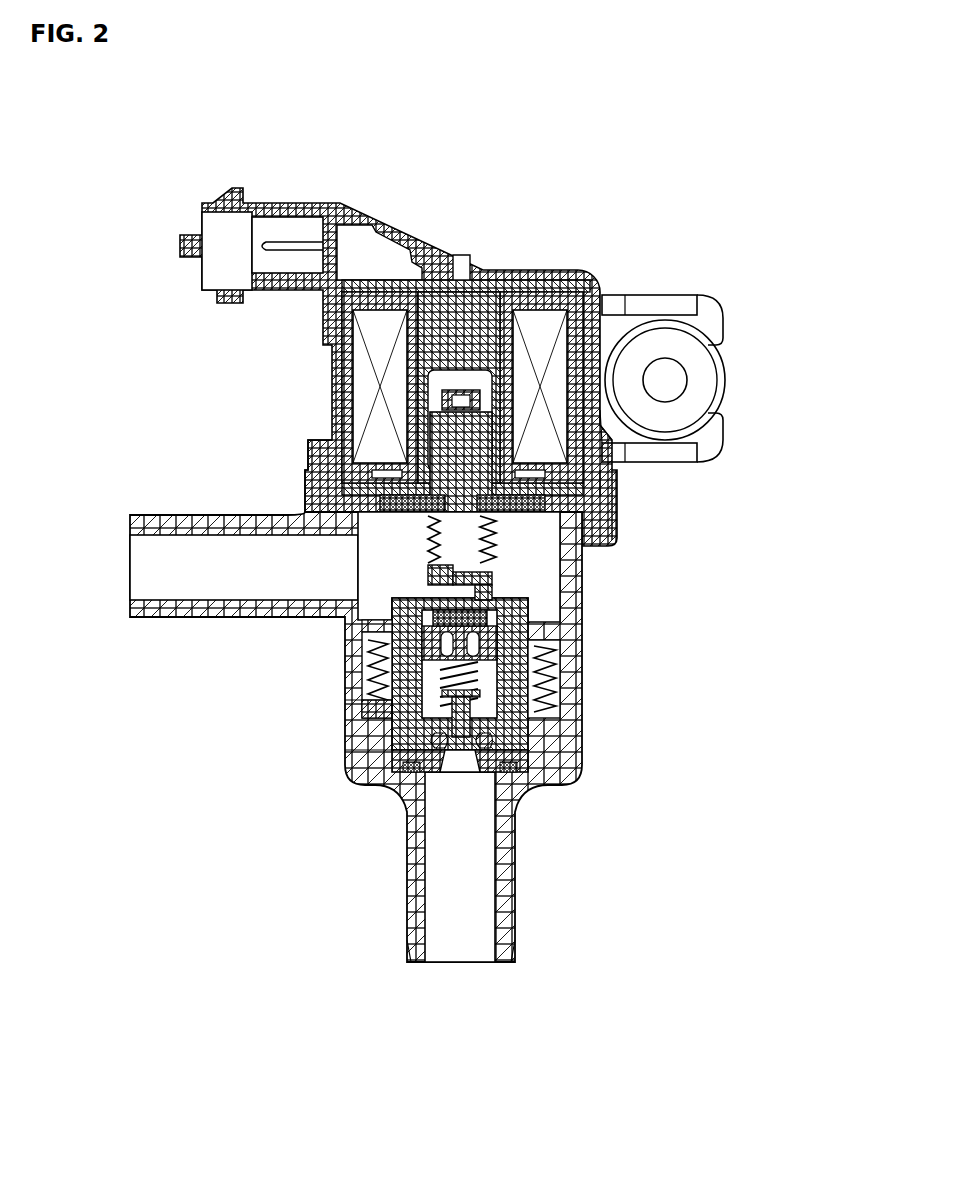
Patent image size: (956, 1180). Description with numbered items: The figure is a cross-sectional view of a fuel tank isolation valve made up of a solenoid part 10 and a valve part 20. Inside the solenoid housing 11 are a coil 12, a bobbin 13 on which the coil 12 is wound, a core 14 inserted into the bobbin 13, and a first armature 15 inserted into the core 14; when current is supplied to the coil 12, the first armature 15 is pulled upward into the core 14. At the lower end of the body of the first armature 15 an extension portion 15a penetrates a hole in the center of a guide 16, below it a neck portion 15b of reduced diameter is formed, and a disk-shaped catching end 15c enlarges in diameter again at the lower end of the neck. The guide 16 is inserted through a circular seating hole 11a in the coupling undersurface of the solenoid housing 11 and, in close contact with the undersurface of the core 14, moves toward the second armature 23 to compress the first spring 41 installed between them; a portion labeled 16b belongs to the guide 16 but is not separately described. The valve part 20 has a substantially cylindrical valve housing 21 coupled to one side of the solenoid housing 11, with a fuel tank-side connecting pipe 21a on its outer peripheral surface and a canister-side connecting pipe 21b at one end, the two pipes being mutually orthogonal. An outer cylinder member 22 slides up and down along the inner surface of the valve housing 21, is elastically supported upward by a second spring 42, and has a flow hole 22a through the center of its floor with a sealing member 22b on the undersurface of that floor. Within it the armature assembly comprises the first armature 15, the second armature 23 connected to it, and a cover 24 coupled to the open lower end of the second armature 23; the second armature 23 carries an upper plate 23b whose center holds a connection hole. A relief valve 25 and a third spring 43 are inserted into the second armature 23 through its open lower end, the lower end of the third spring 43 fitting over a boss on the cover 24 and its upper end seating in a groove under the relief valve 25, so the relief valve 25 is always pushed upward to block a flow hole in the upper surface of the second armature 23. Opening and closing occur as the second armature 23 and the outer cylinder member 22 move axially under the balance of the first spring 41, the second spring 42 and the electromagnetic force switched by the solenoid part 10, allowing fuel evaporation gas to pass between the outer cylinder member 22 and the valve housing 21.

The solenoid part 10 is at (452, 340).
The solenoid housing 11 is at (498, 268).
The seating hole 11a is at (318, 498).
The coil 12 is at (552, 322).
The bobbin 13 is at (528, 302).
The core 14 is at (405, 372).
The first armature 15 is at (428, 425).
The extension portion 15a is at (497, 563).
The neck portion 15b is at (490, 573).
The catching end 15c is at (497, 596).
The guide 16 is at (608, 536).
The bracket flange 16b is at (613, 505).
The valve part 20 is at (398, 758).
The valve housing 21 is at (343, 788).
The fuel tank-side connecting pipe 21a is at (183, 618).
The canister-side connecting pipe 21b is at (515, 892).
The outer cylinder member 22 is at (528, 640).
The flow hole 22a is at (460, 772).
The sealing member 22b is at (528, 765).
The second armature 23 is at (540, 678).
The upper plate 23b is at (428, 570).
The cover 24 is at (515, 725).
The relief valve 25 is at (392, 660).
The first spring 41 is at (500, 543).
The second spring 42 is at (388, 678).
The third spring 43 is at (383, 712).